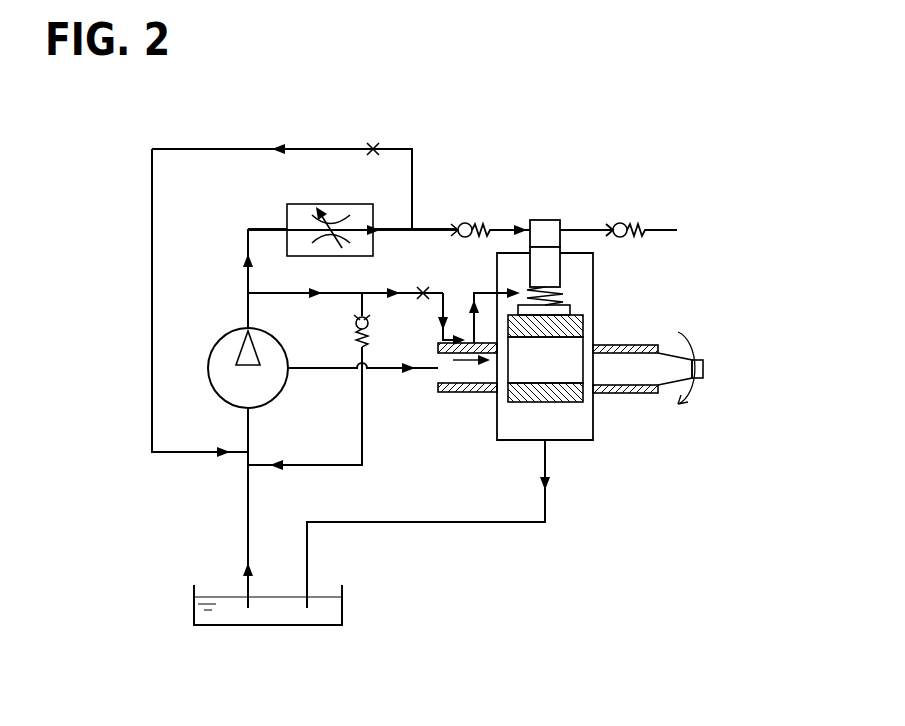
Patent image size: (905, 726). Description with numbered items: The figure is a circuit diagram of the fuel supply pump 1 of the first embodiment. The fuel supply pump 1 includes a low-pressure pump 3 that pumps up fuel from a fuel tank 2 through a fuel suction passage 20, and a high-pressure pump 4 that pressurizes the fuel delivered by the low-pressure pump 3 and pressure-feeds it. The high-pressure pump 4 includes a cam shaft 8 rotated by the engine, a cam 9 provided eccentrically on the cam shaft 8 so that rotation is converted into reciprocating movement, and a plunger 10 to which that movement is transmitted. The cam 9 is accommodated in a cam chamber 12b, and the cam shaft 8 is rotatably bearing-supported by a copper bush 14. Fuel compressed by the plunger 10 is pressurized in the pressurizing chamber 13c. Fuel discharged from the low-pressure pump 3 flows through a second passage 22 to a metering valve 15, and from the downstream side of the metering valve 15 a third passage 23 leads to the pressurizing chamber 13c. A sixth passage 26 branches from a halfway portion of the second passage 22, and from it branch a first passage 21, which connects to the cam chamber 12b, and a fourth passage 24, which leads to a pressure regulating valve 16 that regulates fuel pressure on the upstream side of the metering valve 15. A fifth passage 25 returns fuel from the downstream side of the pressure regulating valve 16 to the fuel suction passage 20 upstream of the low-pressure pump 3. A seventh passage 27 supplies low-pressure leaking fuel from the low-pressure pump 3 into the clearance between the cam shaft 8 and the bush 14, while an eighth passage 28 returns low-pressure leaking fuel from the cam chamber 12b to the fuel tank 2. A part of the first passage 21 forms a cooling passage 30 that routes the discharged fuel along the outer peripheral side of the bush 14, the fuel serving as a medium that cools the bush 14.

The fuel supply pump 1 is at (662, 96).
The fuel tank 2 is at (280, 628).
The low-pressure pump 3 is at (212, 382).
The high-pressure pump 4 is at (602, 469).
The cam shaft 8 is at (450, 375).
The cam 9 is at (568, 347).
The plunger 10 is at (553, 267).
The cam chamber 12b is at (580, 300).
The pressurizing chamber 13c is at (545, 232).
The bush 14 is at (470, 385).
The metering valve 15 is at (300, 203).
The pressure regulating valve 16 is at (353, 327).
The fuel suction passage 20 is at (245, 518).
The first passage 21 is at (439, 290).
The second passage 22 is at (245, 243).
The third passage 23 is at (390, 227).
The fourth passage 24 is at (366, 300).
The fifth passage 25 is at (365, 430).
The sixth passage 26 is at (293, 293).
The seventh passage 27 is at (320, 372).
The eighth passage 28 is at (441, 525).
The cooling passage 30 is at (465, 301).